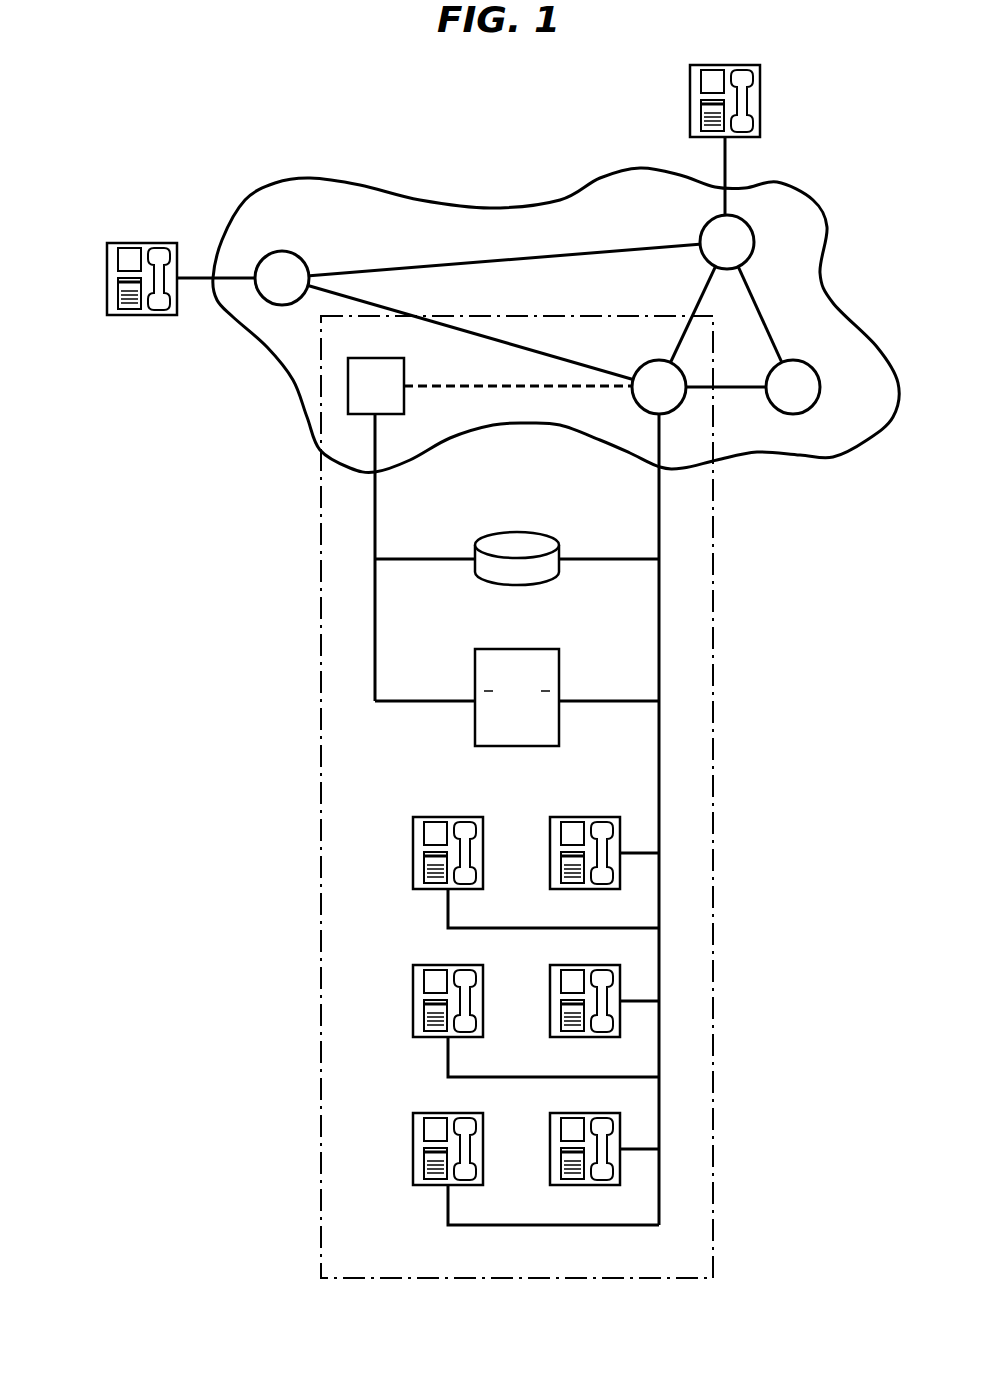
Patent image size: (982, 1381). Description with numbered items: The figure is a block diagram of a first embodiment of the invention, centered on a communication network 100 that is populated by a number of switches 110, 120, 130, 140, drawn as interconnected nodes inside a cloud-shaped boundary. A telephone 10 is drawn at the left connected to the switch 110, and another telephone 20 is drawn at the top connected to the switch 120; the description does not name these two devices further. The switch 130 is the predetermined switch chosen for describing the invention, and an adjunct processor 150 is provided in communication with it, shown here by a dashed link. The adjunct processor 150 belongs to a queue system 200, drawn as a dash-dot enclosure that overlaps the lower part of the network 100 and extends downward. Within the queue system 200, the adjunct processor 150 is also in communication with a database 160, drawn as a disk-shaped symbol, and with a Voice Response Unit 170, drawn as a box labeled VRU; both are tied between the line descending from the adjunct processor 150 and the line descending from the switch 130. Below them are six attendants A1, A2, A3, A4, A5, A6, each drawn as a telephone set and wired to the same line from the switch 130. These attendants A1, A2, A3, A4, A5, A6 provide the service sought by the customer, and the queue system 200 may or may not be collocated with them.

The calling party telephone 10 is at (107, 258).
The called party telephone 20 is at (690, 82).
The communication network 100 is at (524, 246).
The switch 110 is at (303, 257).
The switch 120 is at (700, 233).
The switch 130 is at (638, 362).
The switch 140 is at (820, 385).
The adjunct processor 150 is at (405, 378).
The database 160 is at (515, 545).
The Voice Response Unit 170 is at (560, 666).
The queue system 200 is at (321, 667).
The attendant A1 is at (550, 834).
The attendant A2 is at (413, 834).
The attendant A3 is at (550, 982).
The attendant A4 is at (413, 982).
The attendant A5 is at (550, 1130).
The attendant A6 is at (413, 1130).